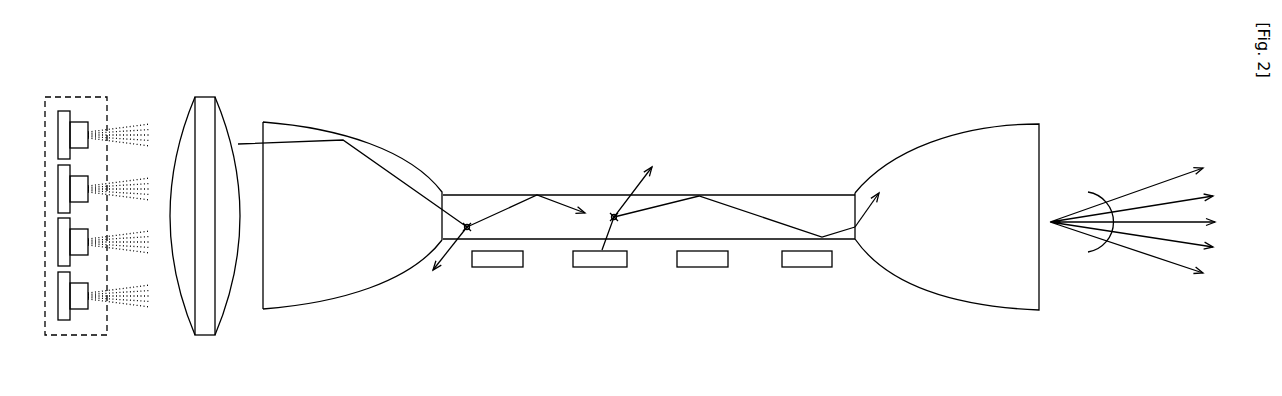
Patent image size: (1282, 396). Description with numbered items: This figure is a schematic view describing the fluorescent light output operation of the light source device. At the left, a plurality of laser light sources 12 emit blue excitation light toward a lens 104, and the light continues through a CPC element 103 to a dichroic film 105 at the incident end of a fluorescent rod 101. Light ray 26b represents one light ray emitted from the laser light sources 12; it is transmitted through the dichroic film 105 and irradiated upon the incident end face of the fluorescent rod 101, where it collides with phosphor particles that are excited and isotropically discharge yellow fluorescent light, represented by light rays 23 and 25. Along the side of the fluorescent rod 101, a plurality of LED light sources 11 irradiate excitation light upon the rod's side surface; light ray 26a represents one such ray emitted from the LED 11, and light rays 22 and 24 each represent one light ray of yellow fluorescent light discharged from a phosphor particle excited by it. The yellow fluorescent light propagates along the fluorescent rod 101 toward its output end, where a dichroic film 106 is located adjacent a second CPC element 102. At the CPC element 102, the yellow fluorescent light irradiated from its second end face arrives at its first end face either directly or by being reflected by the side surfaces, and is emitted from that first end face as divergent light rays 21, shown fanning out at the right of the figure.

The laser light source 12 is at (67, 95).
The lens 104 is at (205, 100).
The CPC element 103 is at (290, 122).
The light ray 26b is at (372, 158).
The fluorescent rod 101 is at (578, 196).
The dichroic film 105 is at (442, 222).
The light ray 25 is at (497, 210).
The light ray 23 is at (440, 255).
The LED light source 11 is at (592, 268).
The light ray 22 is at (645, 168).
The light ray 26a is at (603, 243).
The light ray 24 is at (748, 210).
The dichroic film 106 is at (858, 232).
The CPC element 102 is at (983, 297).
The light rays 21 is at (1101, 185).